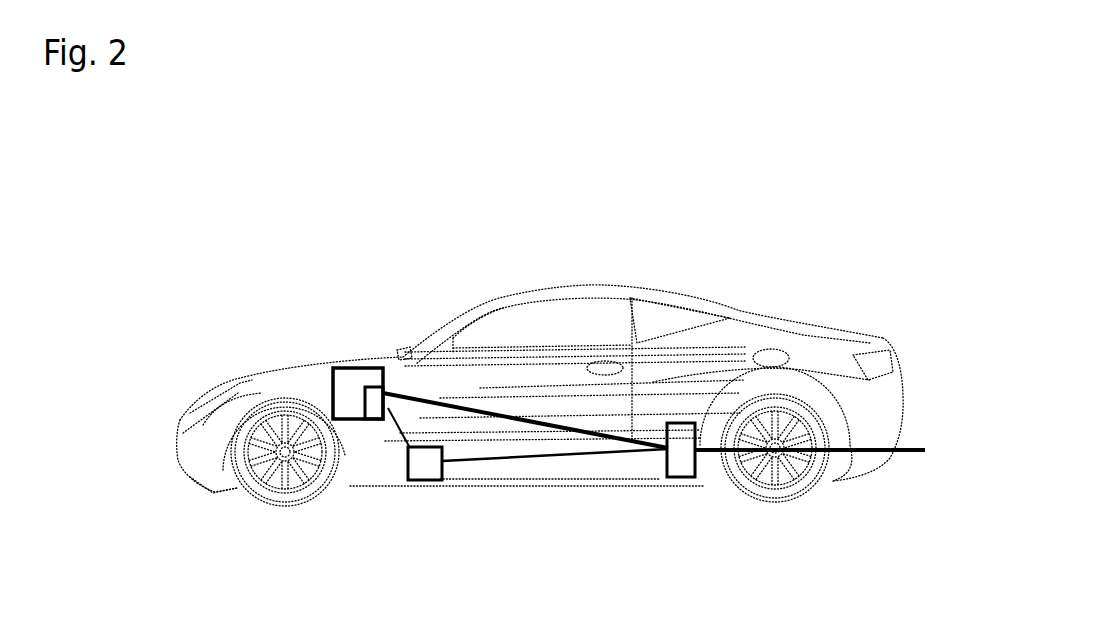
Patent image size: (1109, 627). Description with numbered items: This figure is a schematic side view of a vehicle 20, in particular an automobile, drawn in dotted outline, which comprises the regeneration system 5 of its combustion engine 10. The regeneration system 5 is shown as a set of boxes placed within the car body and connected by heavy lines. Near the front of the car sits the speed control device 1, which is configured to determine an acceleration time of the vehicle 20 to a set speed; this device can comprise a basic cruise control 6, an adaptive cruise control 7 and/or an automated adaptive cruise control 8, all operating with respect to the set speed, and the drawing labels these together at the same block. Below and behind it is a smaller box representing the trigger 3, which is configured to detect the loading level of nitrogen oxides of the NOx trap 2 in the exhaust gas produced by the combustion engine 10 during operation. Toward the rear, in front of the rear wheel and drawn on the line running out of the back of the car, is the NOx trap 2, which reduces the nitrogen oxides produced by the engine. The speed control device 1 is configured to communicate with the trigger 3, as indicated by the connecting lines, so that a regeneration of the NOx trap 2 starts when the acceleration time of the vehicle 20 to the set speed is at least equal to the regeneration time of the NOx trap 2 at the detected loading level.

The vehicle 20 is at (731, 287).
The regeneration system 5 is at (547, 398).
The combustion engine 10 is at (361, 382).
The speed control device 1 is at (485, 472).
The basic cruise control 6 is at (485, 472).
The adaptive cruise control 7 is at (485, 472).
The automated adaptive cruise control 8 is at (374, 411).
The trigger 3 is at (431, 465).
The NOx trap 2 is at (680, 465).